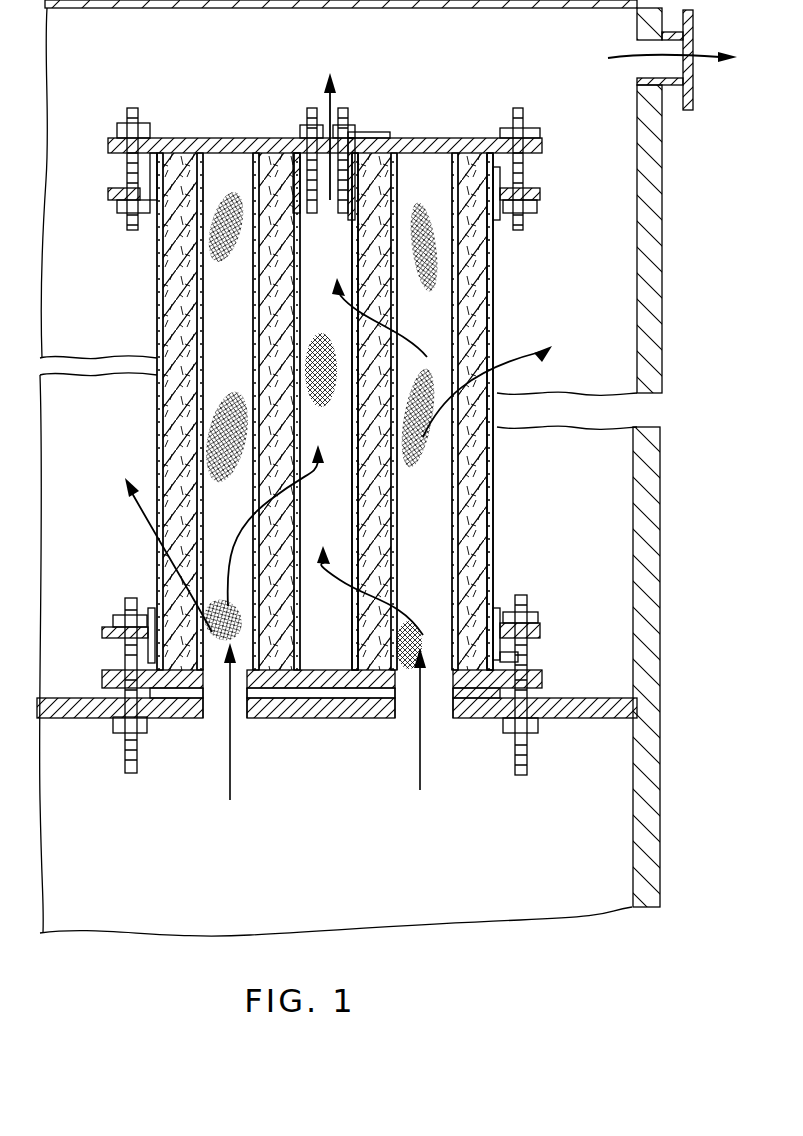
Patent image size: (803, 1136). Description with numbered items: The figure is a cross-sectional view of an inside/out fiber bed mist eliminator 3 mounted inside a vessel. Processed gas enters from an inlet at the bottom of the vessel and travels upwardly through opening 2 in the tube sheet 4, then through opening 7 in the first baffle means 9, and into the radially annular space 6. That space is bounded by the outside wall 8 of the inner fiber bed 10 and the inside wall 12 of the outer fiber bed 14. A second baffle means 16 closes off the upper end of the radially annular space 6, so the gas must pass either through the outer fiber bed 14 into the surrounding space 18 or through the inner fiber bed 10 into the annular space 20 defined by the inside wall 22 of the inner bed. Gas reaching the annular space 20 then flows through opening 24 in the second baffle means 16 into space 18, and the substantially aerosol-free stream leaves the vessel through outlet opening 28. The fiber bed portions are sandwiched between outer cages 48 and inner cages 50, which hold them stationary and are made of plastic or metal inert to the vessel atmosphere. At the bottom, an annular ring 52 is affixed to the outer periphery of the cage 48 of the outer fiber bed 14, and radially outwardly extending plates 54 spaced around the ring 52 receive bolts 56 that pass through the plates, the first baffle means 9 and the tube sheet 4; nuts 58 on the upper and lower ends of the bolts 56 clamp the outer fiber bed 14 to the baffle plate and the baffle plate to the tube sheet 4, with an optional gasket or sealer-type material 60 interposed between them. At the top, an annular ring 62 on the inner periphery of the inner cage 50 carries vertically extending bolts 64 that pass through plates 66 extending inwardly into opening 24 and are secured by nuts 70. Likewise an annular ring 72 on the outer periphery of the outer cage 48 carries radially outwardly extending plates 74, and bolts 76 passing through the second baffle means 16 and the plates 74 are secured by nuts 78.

The opening 2 is at (97, 590).
The inside/out fiber bed mist eliminator 3 is at (97, 108).
The tube sheet 4 is at (66, 720).
The radially annular space 6 is at (216, 320).
The opening 7 is at (248, 688).
The outside wall 8 is at (250, 178).
The first baffle means 9 is at (355, 667).
The inner fiber bed 10 is at (395, 172).
The inside wall 12 is at (217, 152).
The outer fiber bed 14 is at (480, 250).
The second baffle means 16 is at (538, 143).
The space 18 is at (312, 42).
The annular space 20 is at (312, 527).
The inside wall 22 is at (300, 653).
The opening 24 is at (358, 133).
The outlet opening 28 is at (642, 78).
The outer cage 48 is at (493, 310).
The inner cage 50 is at (352, 407).
The annular ring 52 is at (497, 610).
The radially outwardly extending plates 54 is at (540, 630).
The bolts 56 is at (127, 650).
The nuts 58 is at (538, 612).
The gasket or sealer-type material 60 is at (440, 693).
The annular ring 62 is at (352, 214).
The bolts 64 is at (350, 130).
The plates 66 is at (396, 172).
The nuts 70 is at (300, 130).
The annular ring 72 is at (500, 222).
The radially outwardly extending plates 74 is at (110, 193).
The bolts 76 is at (127, 165).
The nuts 78 is at (113, 214).